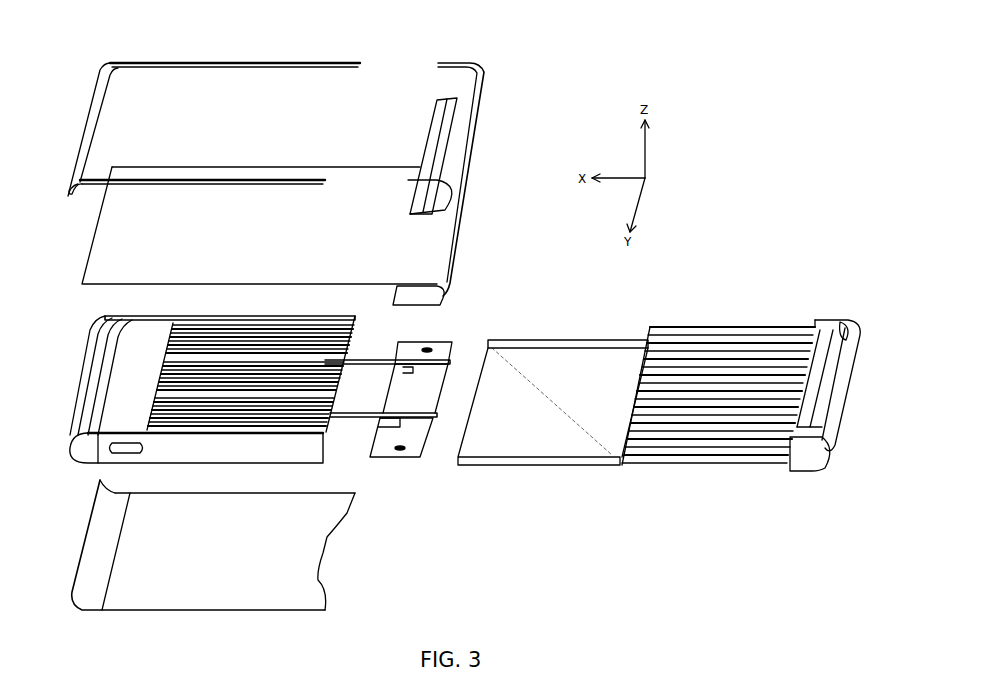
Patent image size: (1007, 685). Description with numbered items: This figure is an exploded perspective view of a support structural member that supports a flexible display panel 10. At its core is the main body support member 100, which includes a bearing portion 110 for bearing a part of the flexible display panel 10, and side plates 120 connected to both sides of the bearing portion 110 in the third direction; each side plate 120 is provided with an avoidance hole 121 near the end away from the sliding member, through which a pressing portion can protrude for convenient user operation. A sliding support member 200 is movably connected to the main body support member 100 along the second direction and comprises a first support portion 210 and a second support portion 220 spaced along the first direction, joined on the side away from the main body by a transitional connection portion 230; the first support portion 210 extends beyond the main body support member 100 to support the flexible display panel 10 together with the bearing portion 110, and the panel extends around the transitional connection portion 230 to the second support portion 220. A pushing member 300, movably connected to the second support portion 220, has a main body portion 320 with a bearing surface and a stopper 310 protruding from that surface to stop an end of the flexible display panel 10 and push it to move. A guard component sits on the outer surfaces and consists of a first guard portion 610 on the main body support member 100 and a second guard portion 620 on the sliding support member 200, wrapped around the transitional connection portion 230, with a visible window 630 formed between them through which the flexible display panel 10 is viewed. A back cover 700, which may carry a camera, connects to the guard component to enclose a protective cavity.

The flexible display panel 10 is at (289, 159).
The first guard portion 610 is at (228, 62).
The second guard portion 620 is at (483, 78).
The visible window 630 is at (155, 83).
The main body support member 100 is at (193, 400).
The bearing portion 110 is at (130, 355).
The side plate 120 is at (196, 461).
The avoidance hole 121 is at (128, 455).
The pushing member 300 is at (405, 392).
The stopper 310 is at (400, 378).
The main body portion 320 is at (420, 437).
The sliding support member 200 is at (659, 393).
The first support portion 210 is at (712, 327).
The second support portion 220 is at (615, 338).
The transitional connection portion 230 is at (840, 318).
The back cover 700 is at (325, 555).